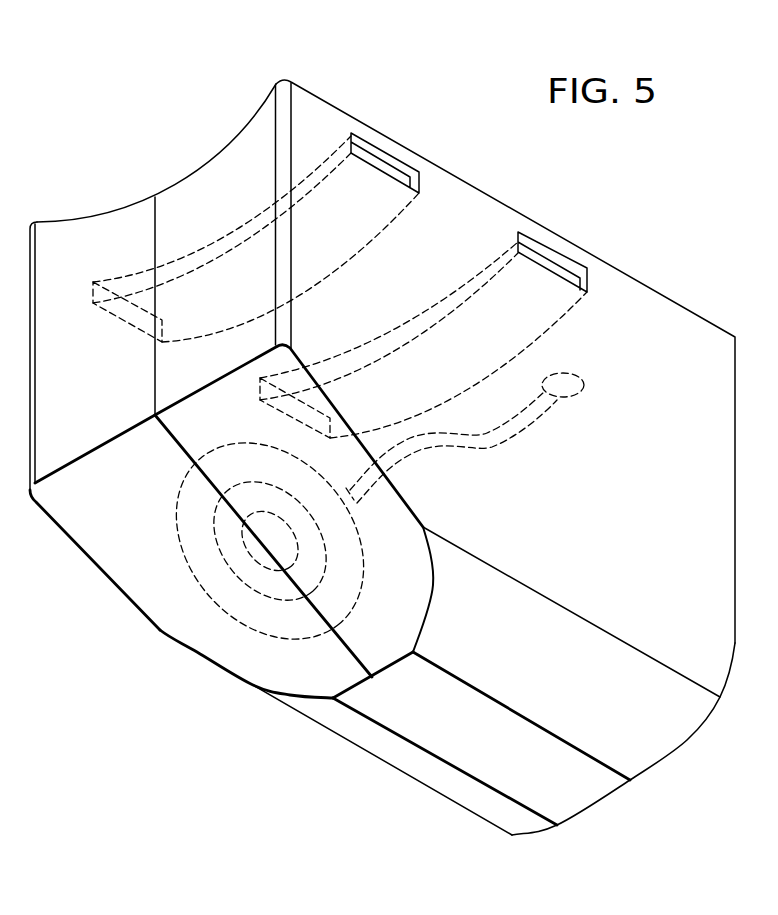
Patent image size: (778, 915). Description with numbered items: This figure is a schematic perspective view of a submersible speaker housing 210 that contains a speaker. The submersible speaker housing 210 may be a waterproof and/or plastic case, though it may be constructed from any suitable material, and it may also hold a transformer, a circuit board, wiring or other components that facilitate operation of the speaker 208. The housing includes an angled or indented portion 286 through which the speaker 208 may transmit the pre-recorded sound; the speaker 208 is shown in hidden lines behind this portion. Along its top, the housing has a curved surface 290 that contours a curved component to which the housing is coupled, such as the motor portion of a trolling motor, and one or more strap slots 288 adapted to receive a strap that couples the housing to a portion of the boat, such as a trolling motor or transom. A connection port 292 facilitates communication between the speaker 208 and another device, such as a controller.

The submersible speaker housing 210 is at (150, 92).
The curved surface 290 is at (173, 186).
The angled or indented portion 286 is at (92, 547).
The speaker 208 is at (210, 592).
The strap slots 288 is at (393, 160).
The connection port 292 is at (574, 396).